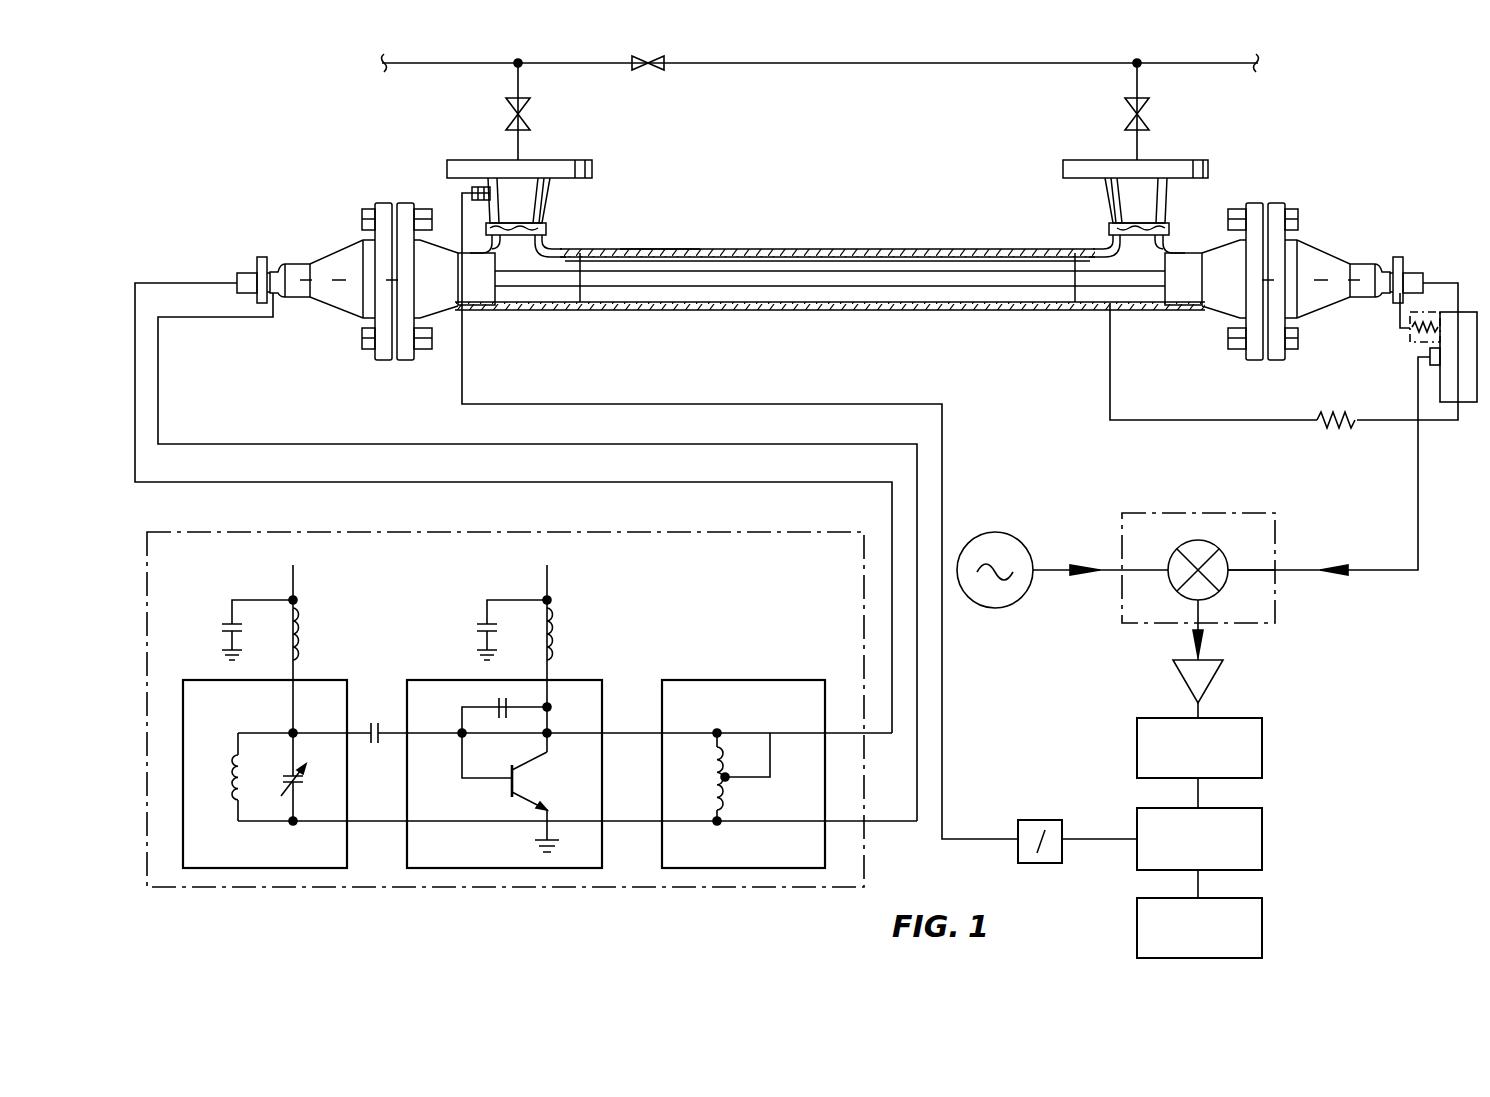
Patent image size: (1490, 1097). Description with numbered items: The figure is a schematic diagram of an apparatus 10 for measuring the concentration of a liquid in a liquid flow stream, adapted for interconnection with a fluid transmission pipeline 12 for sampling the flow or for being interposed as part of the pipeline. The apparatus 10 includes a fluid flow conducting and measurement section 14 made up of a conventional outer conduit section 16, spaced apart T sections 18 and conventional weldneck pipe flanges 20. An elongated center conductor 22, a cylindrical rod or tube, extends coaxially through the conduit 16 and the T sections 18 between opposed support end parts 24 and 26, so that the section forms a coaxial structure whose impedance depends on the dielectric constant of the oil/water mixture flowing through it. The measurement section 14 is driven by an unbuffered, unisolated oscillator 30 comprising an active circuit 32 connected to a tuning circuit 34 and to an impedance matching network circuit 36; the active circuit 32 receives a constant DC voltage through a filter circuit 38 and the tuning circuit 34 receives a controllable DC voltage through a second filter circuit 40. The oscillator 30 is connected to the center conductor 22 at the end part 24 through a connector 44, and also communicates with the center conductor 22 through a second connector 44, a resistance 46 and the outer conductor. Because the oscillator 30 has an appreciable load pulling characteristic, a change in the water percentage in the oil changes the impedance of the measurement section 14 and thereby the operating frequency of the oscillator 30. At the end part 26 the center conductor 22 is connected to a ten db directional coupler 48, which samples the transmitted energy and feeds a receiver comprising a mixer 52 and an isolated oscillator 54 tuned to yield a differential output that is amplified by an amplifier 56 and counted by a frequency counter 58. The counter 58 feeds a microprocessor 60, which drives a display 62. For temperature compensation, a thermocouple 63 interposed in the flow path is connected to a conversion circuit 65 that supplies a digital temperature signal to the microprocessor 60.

The apparatus 10 is at (1362, 189).
The fluid transmission pipeline 12 is at (860, 66).
The fluid flow conducting and measurement section 14 is at (889, 246).
The outer conduit section 16 is at (746, 247).
The T sections 18 is at (562, 244).
The weldneck pipe flanges 20 is at (553, 202).
The center conductor 22 is at (860, 288).
The support end part 24 is at (347, 248).
The support end part 26 is at (1312, 250).
The oscillator 30 is at (620, 893).
The active circuit 32 is at (425, 868).
The tuning circuit 34 is at (291, 868).
The impedance matching network circuit 36 is at (697, 868).
The filter circuit 38 is at (558, 640).
The second filter circuit 40 is at (305, 640).
The connector 44 is at (246, 270).
The resistance 46 is at (1337, 412).
The directional coupler 48 is at (1473, 402).
The mixer 52 is at (1203, 513).
The isolated oscillator 54 is at (1005, 607).
The amplifier 56 is at (1222, 668).
The frequency counter 58 is at (1262, 745).
The microprocessor 60 is at (1262, 838).
The display 62 is at (1262, 922).
The thermocouple 63 is at (504, 186).
The conversion circuit 65 is at (1050, 818).